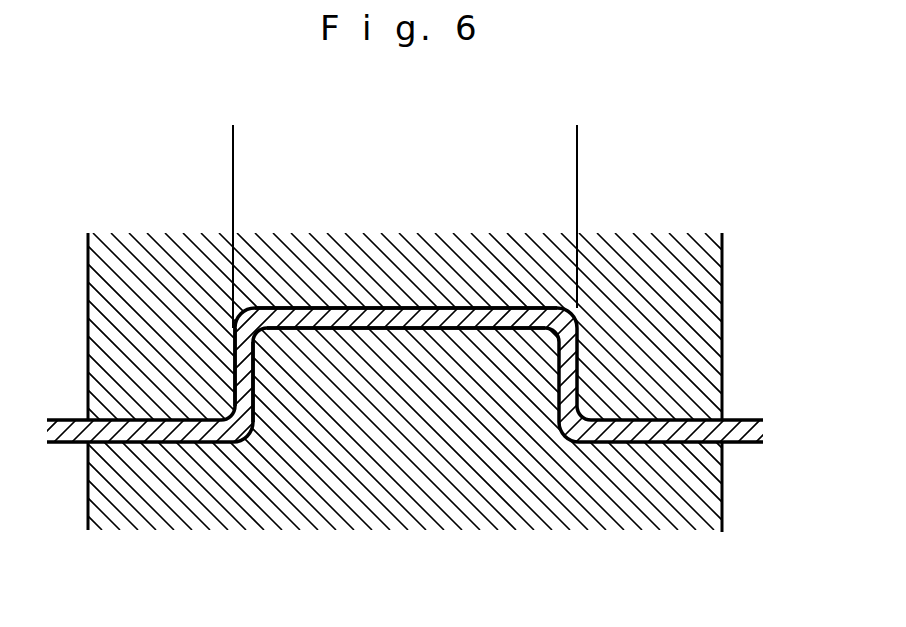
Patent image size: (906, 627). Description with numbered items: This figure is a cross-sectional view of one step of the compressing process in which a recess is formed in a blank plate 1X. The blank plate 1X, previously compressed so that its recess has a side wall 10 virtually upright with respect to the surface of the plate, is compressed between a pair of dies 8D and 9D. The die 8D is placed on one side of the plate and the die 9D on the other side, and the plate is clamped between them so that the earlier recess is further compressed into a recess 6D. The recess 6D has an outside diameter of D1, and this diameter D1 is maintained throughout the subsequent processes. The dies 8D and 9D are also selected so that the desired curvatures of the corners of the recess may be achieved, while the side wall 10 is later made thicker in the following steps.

The blank plate 1X is at (66, 418).
The side wall 10 is at (232, 363).
The recess 6D is at (482, 306).
The die 8D is at (700, 333).
The die 9D is at (720, 492).
The outside diameter D1 is at (577, 142).